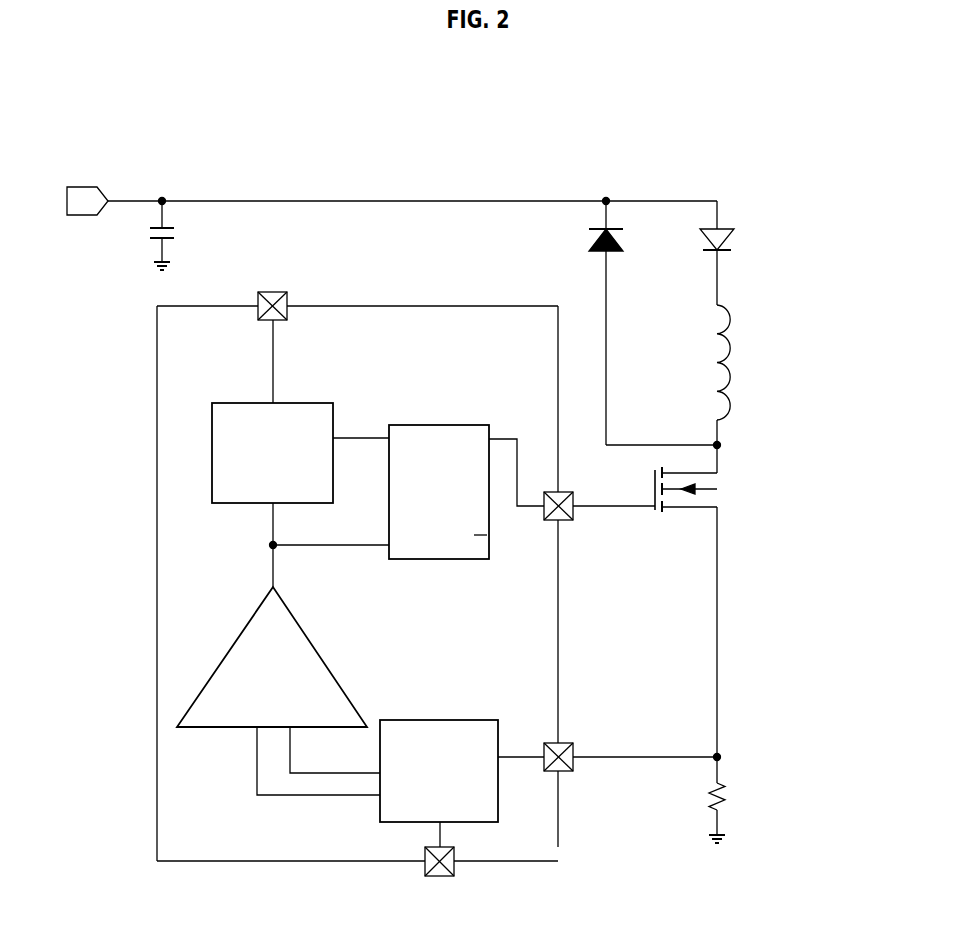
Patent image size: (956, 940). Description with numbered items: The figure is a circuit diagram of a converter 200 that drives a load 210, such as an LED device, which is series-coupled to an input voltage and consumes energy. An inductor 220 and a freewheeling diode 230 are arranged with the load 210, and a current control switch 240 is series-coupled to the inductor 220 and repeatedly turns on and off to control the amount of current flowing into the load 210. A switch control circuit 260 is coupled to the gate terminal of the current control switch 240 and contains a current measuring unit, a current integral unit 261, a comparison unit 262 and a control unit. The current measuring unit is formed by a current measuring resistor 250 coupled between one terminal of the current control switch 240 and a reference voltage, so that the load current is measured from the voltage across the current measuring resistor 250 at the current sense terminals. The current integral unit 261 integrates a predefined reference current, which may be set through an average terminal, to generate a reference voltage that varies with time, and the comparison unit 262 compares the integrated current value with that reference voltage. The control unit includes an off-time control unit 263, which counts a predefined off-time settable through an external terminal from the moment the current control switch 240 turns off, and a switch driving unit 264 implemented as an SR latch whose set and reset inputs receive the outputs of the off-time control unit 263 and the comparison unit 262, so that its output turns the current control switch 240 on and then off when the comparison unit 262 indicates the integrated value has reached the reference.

The converter 200 is at (432, 116).
The load 210 is at (735, 240).
The inductor 220 is at (731, 352).
The freewheeling diode 230 is at (589, 238).
The current control switch 240 is at (717, 489).
The current measuring resistor 250 is at (726, 798).
The switch control circuit 260 is at (426, 306).
The current integral unit 261 is at (442, 720).
The comparison unit 262 is at (326, 656).
The off-time control unit 263 is at (317, 403).
The switch driving unit 264 is at (441, 425).